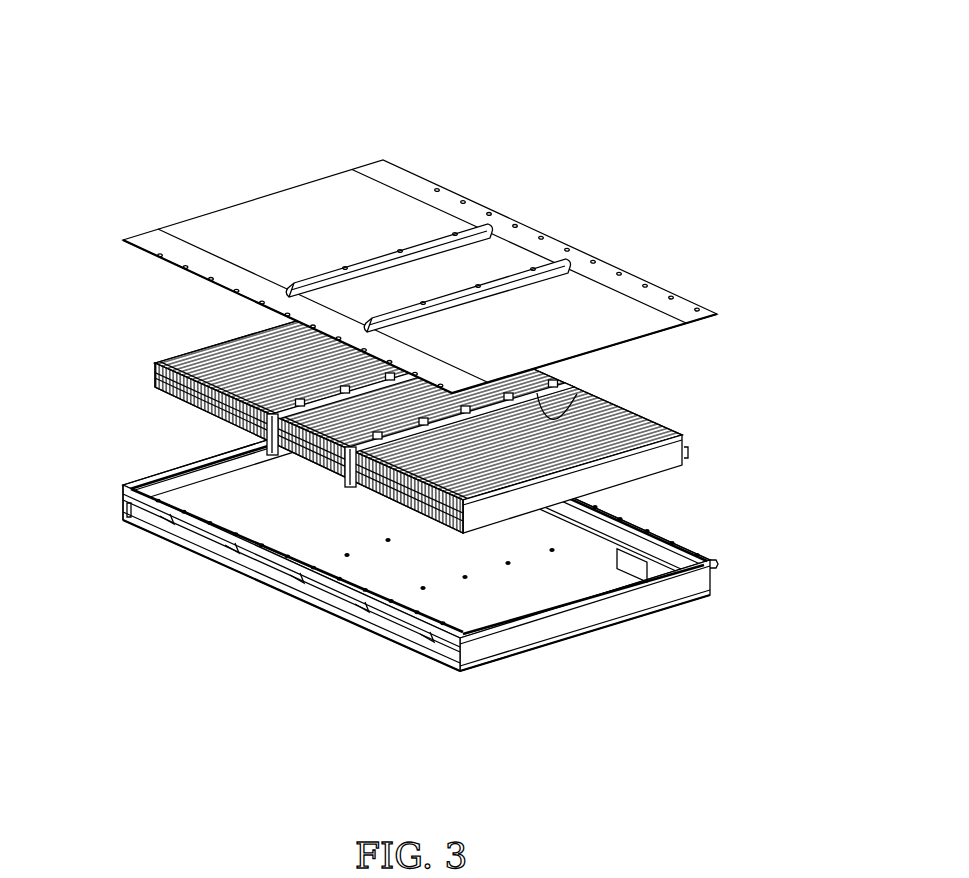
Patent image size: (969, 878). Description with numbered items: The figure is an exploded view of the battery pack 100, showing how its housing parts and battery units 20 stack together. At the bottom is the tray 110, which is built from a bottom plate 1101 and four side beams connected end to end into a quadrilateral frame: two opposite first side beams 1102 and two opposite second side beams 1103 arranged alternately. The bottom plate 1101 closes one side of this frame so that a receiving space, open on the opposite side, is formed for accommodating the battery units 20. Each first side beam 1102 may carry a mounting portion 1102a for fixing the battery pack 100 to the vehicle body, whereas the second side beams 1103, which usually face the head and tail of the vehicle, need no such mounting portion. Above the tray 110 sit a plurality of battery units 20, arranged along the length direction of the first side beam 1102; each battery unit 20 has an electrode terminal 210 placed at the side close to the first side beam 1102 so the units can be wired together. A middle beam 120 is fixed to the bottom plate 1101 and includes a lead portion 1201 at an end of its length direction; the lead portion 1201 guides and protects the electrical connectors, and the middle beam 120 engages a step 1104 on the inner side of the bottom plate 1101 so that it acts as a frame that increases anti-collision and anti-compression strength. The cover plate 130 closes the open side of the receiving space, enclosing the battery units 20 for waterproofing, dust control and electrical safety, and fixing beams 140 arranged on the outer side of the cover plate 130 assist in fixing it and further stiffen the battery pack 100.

The battery pack 100 is at (434, 21).
The tray 110 is at (411, 607).
The bottom plate 1101 is at (547, 587).
The first side beam 1102 is at (293, 605).
The mounting portion 1102a is at (417, 648).
The second side beam 1103 is at (188, 488).
The step 1104 is at (653, 530).
The middle beam 120 is at (398, 473).
The lead portion 1201 is at (266, 455).
The cover plate 130 is at (420, 271).
The fixing beam 140 is at (487, 227).
The battery unit 20 is at (383, 415).
The electrode terminal 210 is at (153, 380).